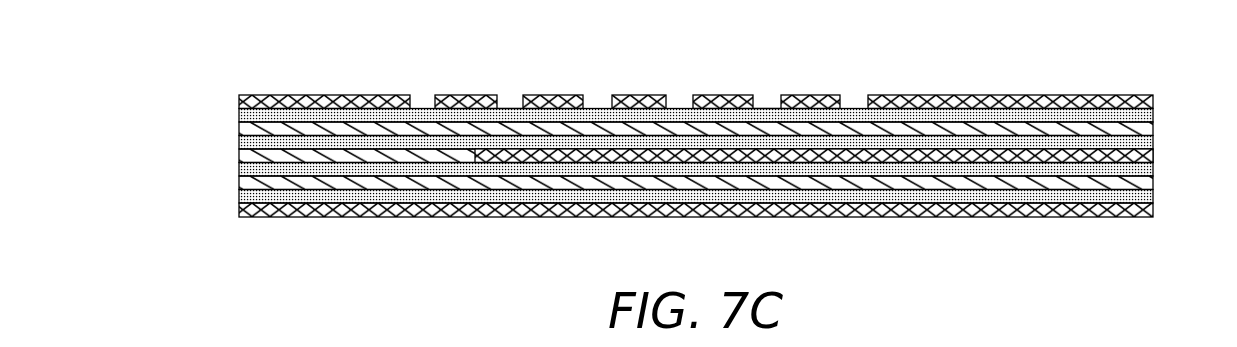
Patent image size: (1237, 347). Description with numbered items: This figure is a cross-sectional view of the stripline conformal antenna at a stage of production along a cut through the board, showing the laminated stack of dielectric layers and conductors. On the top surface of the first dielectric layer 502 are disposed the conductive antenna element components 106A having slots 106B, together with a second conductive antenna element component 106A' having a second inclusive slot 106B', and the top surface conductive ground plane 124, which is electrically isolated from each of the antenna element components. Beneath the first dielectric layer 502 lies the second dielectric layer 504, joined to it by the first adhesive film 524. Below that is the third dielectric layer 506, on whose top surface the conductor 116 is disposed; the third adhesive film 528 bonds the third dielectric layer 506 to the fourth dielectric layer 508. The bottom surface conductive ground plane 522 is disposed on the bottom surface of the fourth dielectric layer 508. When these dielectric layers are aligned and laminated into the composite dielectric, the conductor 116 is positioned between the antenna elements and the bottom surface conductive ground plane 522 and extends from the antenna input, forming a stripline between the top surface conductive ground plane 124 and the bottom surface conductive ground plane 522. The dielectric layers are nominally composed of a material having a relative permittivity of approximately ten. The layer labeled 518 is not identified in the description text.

The top surface conductive ground plane 124 is at (327, 93).
The second conductive antenna element component 106A' is at (509, 76).
The second inclusive slot 106B' is at (510, 76).
The conductive antenna element component 106A is at (767, 76).
The slot 106B is at (768, 76).
The first dielectric layer 502 is at (1153, 108).
The first adhesive film 524 is at (1153, 122).
The second dielectric layer 504 is at (1153, 149).
The core layer 518 is at (1072, 153).
The conductor 116 is at (532, 155).
The third dielectric layer 506 is at (1153, 163).
The fourth dielectric layer 508 is at (1153, 190).
The third adhesive film 528 is at (1124, 183).
The bottom surface conductive ground plane 522 is at (1153, 217).